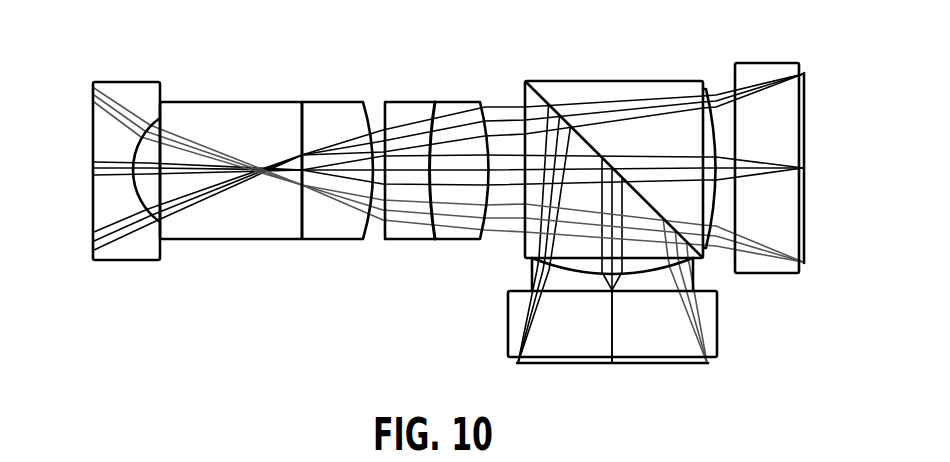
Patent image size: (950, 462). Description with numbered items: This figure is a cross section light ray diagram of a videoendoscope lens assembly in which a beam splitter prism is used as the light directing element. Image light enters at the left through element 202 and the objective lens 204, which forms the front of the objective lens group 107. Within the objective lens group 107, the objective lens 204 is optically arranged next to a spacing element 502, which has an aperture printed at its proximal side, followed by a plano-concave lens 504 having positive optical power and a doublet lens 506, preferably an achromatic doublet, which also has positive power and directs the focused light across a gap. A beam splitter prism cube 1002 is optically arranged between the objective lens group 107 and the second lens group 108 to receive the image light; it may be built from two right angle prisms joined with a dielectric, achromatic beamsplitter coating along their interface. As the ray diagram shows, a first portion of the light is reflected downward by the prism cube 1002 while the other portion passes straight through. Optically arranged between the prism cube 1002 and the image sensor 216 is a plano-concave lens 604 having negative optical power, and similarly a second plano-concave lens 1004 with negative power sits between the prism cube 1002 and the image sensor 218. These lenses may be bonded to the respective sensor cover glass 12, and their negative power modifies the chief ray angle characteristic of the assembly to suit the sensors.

The objective lens group 107 is at (523, 48).
The second lens group 108 is at (733, 46).
The window 202 is at (88, 114).
The objective lens 204 is at (126, 148).
The spacing element 502 is at (208, 102).
The plano-concave lens 504 is at (341, 102).
The doublet lens 506 is at (420, 102).
The beam splitter prism cube 1002 is at (620, 81).
The second plano-concave lens 1004 is at (712, 89).
The plano-concave lens 604 is at (530, 268).
The sensor cover glass 12 is at (508, 329).
The image sensor 216 is at (708, 364).
The image sensor 218 is at (806, 97).